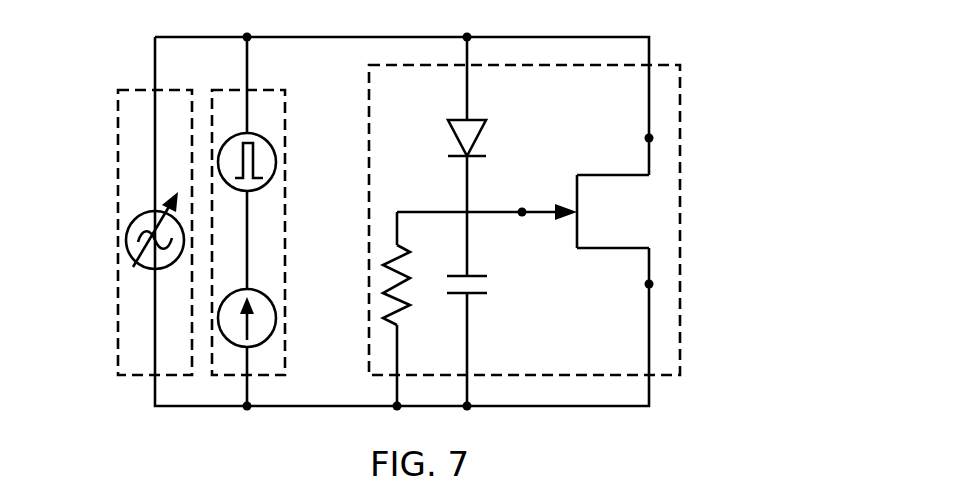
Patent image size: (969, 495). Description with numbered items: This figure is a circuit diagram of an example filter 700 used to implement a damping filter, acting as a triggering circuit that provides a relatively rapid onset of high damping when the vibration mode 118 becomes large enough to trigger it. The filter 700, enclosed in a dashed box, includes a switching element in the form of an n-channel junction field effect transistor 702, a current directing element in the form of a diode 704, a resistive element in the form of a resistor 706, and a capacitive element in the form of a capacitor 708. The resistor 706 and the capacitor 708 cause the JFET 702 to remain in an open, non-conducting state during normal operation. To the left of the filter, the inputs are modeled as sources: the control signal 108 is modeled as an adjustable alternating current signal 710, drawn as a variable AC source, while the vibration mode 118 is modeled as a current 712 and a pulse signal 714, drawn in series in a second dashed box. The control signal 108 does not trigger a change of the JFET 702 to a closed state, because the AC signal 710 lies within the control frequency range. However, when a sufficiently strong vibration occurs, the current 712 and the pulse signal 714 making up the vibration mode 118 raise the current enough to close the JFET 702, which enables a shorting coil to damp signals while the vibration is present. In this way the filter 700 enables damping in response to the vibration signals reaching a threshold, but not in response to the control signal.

The filter 700 is at (672, 64).
The n-channel junction field effect transistor 702 is at (625, 173).
The diode 704 is at (454, 118).
The resistor 706 is at (386, 264).
The capacitor 708 is at (482, 274).
The adjustable alternating current signal 710 is at (131, 223).
The current 712 is at (279, 302).
The pulse signal 714 is at (279, 155).
The control signal 108 is at (118, 90).
The vibration mode 118 is at (262, 90).